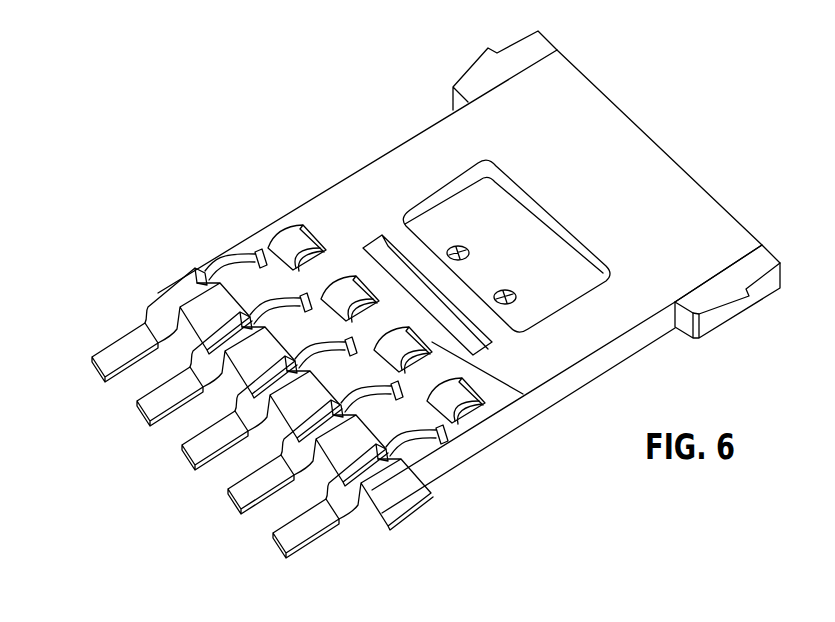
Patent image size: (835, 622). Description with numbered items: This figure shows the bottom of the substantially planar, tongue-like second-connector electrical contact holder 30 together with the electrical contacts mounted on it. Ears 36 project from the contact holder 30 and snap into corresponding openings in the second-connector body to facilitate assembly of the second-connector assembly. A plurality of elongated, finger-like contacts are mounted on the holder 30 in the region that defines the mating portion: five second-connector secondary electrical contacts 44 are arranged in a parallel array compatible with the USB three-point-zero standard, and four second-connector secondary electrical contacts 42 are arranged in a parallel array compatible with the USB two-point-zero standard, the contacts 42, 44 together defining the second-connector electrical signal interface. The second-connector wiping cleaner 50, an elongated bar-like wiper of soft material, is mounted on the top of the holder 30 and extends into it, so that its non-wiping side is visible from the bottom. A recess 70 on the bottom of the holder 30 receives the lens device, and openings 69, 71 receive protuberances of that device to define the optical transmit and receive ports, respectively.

The second-connector electrical contact holder 30 is at (647, 136).
The ears 36 is at (478, 55).
The second-connector secondary electrical contacts 42 is at (290, 240).
The second-connector secondary electrical contacts 44 is at (102, 346).
The second-connector wiping cleaner 50 is at (392, 247).
The opening 69 is at (508, 295).
The recess 70 is at (520, 228).
The opening 71 is at (464, 249).